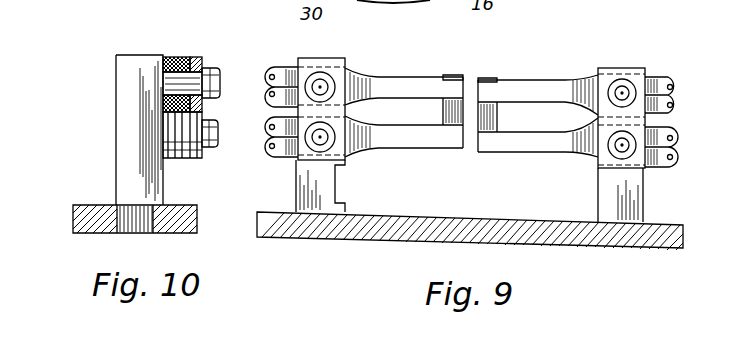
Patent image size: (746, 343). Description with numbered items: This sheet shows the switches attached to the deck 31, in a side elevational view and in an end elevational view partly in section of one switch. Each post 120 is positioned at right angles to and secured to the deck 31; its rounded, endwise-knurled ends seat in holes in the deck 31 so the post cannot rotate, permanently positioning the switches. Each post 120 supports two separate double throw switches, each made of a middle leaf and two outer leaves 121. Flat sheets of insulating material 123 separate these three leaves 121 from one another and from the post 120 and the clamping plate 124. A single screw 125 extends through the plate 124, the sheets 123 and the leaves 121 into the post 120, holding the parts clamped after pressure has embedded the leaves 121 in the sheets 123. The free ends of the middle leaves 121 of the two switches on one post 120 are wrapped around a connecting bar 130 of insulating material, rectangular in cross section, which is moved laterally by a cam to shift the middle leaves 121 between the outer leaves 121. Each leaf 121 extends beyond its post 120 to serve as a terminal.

In FIG. 10, the deck 31 is at (78, 215).
In FIG. 9, the deck 31 is at (405, 232).
In FIG. 10, the post 120 is at (140, 138).
In FIG. 9, the post 120 is at (312, 200).
In FIG. 10, the switch leaf 121 is at (180, 160).
In FIG. 9, the switch leaf 121 is at (420, 87).
In FIG. 10, the sheets of insulating material 123 is at (185, 57).
In FIG. 10, the clamping plate 124 is at (198, 57).
In FIG. 10, the screw 125 is at (220, 73).
In FIG. 9, the screw 125 is at (325, 77).
In FIG. 9, the connecting bar 130 is at (443, 112).